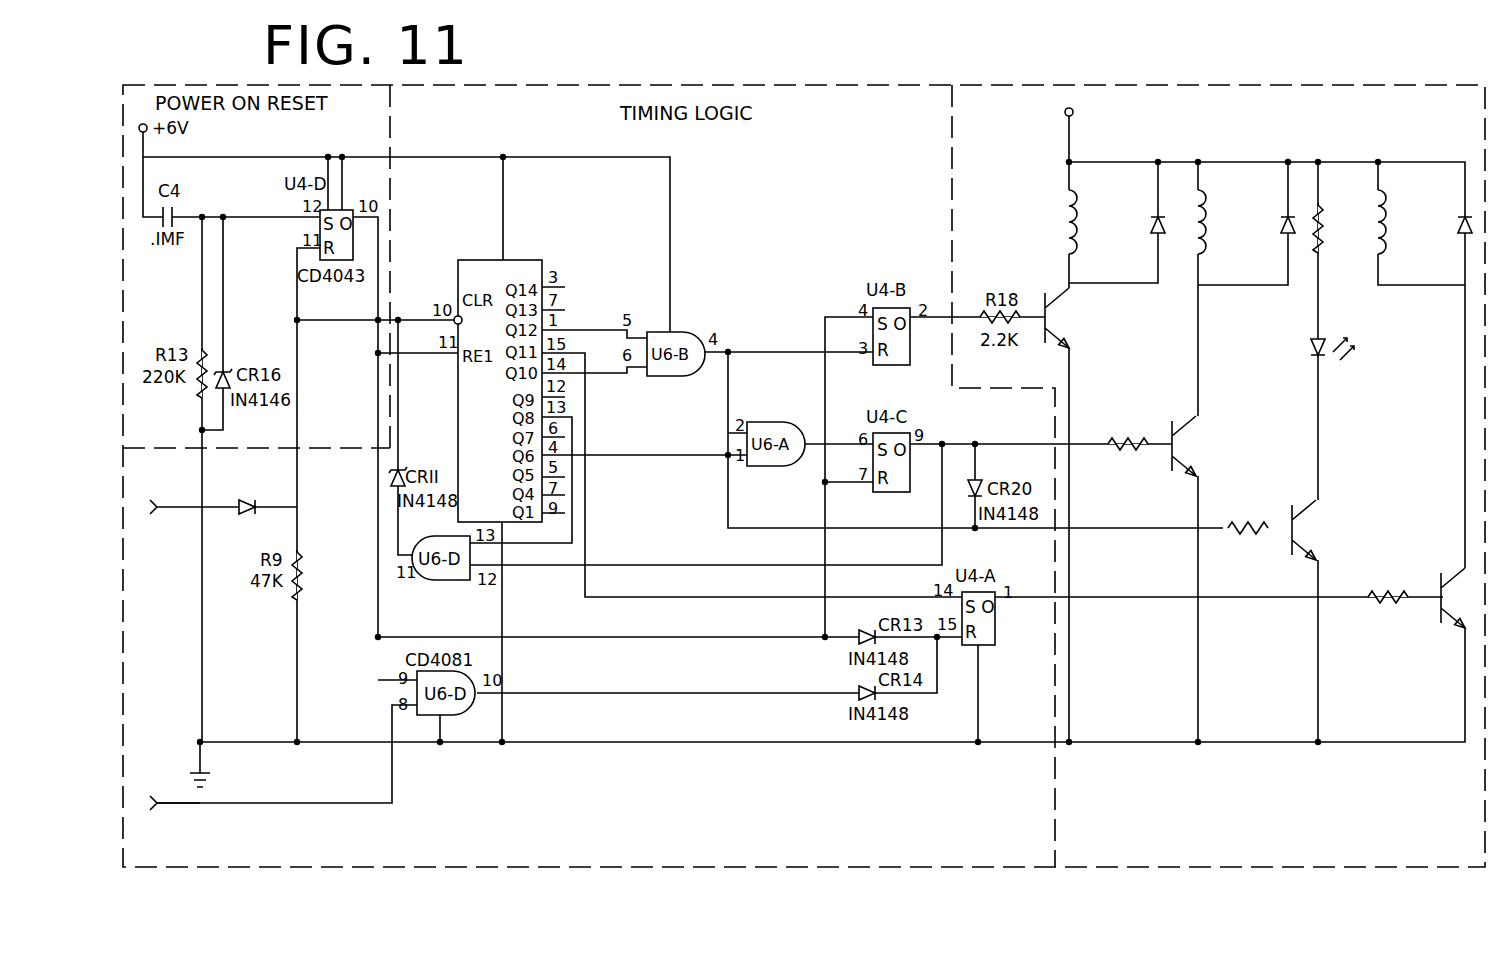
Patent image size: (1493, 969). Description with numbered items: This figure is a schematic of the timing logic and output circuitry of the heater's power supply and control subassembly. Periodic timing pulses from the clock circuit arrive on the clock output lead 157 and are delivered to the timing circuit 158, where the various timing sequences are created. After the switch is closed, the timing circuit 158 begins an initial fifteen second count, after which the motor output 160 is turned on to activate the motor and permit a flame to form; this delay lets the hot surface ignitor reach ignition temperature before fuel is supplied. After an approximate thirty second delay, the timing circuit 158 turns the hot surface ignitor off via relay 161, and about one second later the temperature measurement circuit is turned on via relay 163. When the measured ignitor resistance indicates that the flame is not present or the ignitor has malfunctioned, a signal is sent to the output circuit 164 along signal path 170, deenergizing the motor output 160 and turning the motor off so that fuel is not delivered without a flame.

The clock output lead 157 is at (188, 510).
The timing circuit 158 is at (897, 100).
The motor output 160 is at (1426, 192).
The relay 161 is at (1105, 187).
The relay 163 is at (1228, 187).
The output circuit 164 is at (1192, 833).
The signal path 170 is at (313, 803).